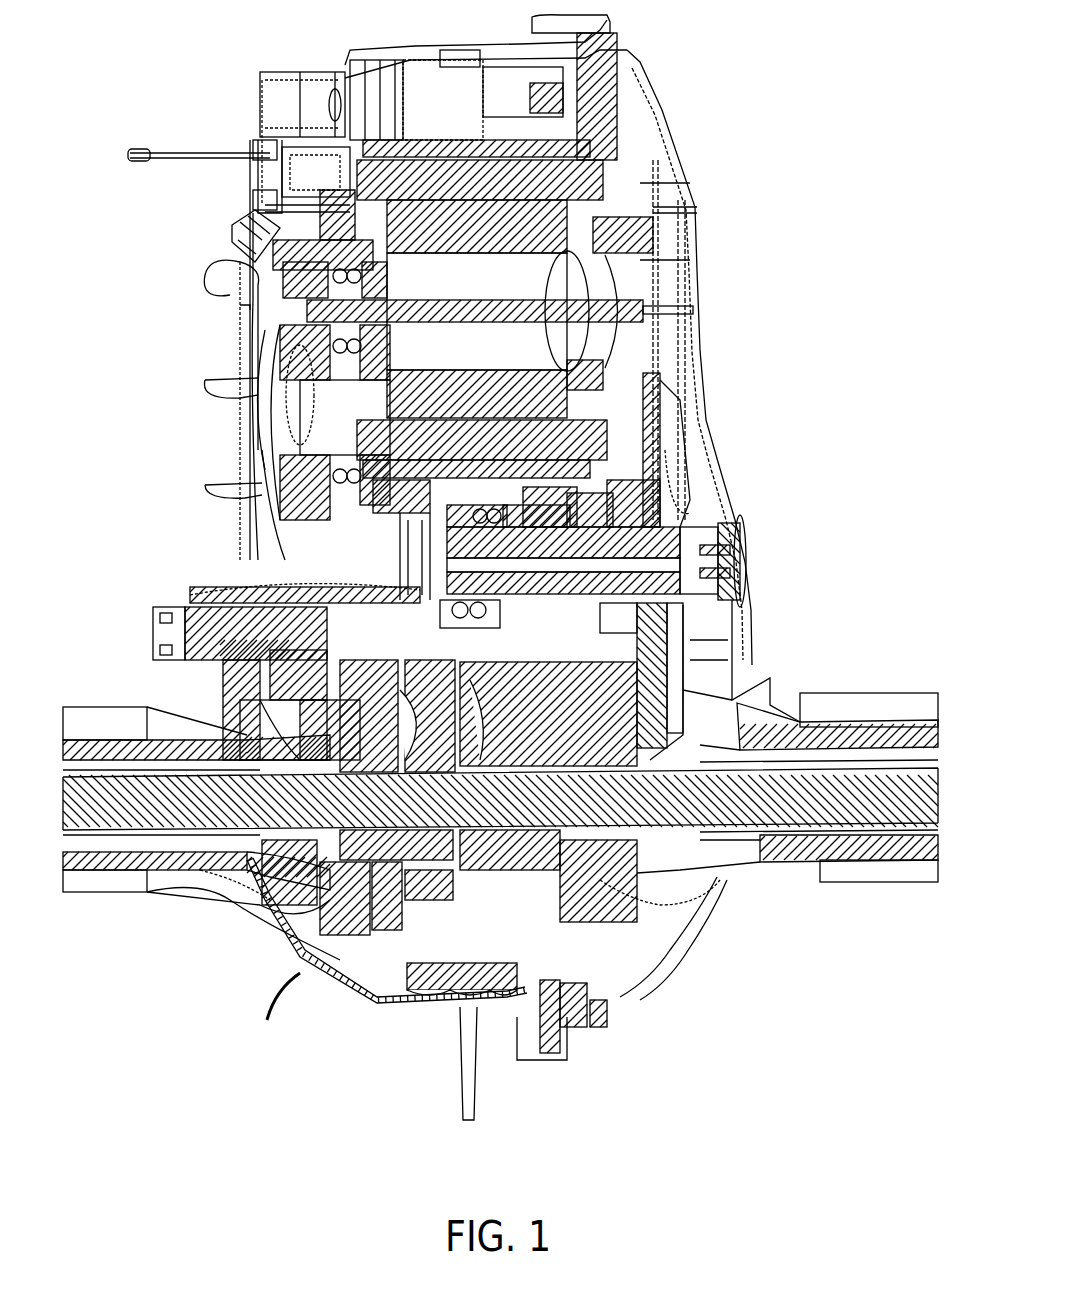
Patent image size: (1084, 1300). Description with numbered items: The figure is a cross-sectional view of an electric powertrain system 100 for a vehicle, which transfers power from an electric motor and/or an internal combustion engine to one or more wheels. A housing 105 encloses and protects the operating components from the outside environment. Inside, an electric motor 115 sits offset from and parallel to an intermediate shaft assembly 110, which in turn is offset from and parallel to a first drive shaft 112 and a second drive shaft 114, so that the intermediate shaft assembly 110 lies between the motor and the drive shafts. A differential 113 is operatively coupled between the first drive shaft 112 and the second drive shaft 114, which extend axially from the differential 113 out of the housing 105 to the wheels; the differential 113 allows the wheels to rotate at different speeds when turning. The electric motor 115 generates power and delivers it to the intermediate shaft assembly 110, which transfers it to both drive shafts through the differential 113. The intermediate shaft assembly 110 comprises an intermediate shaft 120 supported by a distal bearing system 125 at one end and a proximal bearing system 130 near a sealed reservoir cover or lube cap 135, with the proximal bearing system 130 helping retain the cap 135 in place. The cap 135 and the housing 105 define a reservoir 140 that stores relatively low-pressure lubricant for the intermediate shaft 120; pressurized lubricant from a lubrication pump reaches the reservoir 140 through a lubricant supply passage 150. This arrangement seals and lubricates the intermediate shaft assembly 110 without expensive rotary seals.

The electric powertrain system 100 is at (727, 150).
The housing 105 is at (307, 92).
The intermediate shaft assembly 110 is at (742, 577).
The first drive shaft 112 is at (623, 800).
The differential 113 is at (360, 870).
The second drive shaft 114 is at (215, 850).
The electric motor 115 is at (345, 305).
The intermediate shaft 120 is at (640, 578).
The distal bearing system 125 is at (692, 514).
The proximal bearing system 130 is at (450, 610).
The sealed reservoir cover or lube cap 135 is at (335, 525).
The reservoir 140 is at (405, 568).
The lubricant supply passage 150 is at (420, 625).